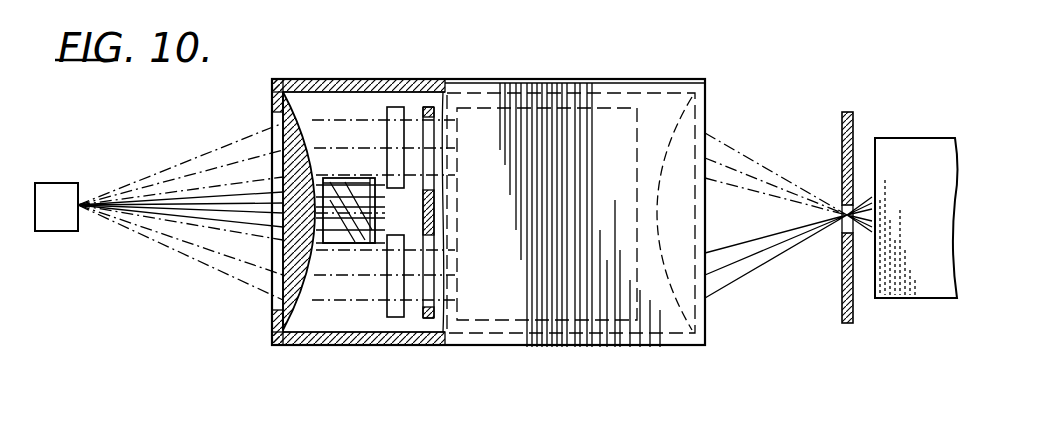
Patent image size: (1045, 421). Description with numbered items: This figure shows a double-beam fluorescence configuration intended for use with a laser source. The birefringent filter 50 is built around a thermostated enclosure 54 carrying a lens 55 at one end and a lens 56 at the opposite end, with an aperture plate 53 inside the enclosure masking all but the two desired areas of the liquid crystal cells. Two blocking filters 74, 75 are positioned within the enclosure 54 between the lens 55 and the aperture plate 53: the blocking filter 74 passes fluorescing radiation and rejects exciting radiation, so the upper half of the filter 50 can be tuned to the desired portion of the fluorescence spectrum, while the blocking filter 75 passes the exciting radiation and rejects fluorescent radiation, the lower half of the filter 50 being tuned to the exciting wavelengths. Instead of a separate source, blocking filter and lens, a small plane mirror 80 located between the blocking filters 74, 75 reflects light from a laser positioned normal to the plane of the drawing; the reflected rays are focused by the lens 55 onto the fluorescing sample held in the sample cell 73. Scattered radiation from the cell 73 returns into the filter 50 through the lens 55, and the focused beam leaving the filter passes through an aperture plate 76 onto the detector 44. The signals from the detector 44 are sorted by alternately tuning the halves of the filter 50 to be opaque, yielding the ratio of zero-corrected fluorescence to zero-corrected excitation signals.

The detector 44 is at (915, 150).
The birefringent filter 50 is at (672, 80).
The aperture plate 53 is at (434, 200).
The thermostated enclosure 54 is at (560, 83).
The lens 55 is at (292, 132).
The lens 56 is at (672, 143).
The sample cell 73 is at (78, 192).
The blocking filter 74 is at (396, 110).
The blocking filter 75 is at (396, 317).
The aperture plate 76 is at (842, 130).
The plane mirror 80 is at (375, 213).